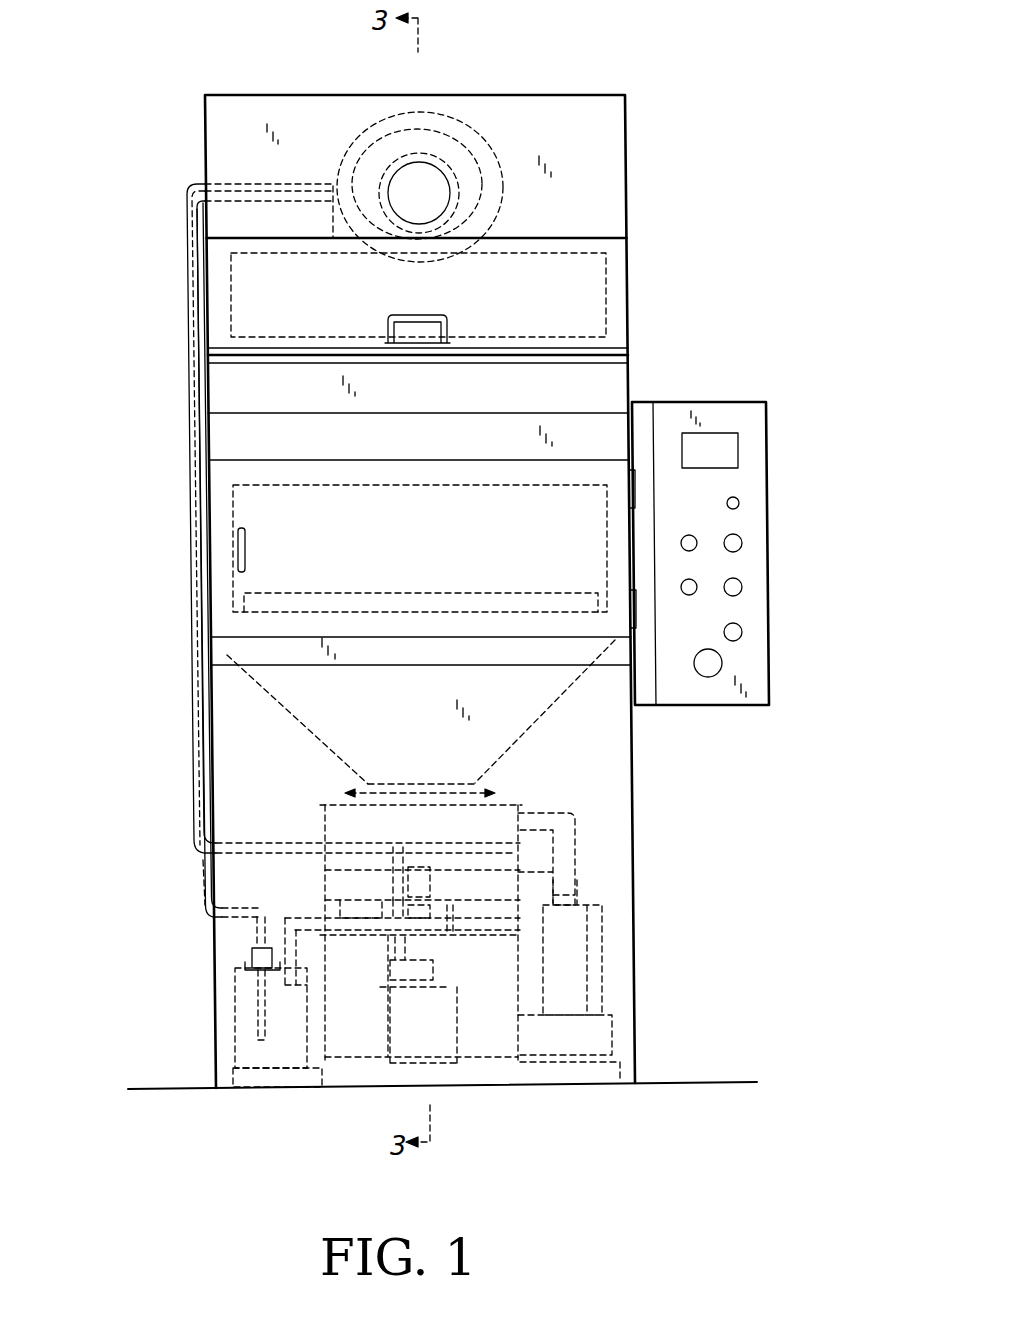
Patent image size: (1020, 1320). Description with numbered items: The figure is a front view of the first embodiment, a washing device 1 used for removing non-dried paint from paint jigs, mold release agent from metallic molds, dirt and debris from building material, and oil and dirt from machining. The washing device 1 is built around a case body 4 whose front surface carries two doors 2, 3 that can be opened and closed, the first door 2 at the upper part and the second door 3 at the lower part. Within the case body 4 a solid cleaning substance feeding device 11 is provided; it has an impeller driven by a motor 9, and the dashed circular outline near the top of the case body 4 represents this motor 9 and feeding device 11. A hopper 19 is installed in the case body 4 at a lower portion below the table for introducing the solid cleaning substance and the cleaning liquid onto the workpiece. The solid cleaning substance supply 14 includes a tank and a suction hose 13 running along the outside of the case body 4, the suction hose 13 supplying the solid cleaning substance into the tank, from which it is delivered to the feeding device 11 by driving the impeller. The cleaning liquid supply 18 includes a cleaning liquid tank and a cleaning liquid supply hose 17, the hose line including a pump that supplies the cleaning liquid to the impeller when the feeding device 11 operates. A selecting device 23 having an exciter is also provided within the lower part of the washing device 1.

The washing device 1 is at (760, 98).
The door 2 is at (590, 288).
The door 3 is at (255, 510).
The case body 4 is at (630, 378).
The motor 9 is at (403, 173).
The solid cleaning substance feeding device 11 is at (447, 135).
The suction hose 13 is at (192, 788).
The solid cleaning substance supply 14 is at (380, 958).
The cleaning liquid supply hose 17 is at (196, 890).
The cleaning liquid supply 18 is at (235, 1012).
The hopper 19 is at (510, 737).
The selecting device 23 is at (330, 810).